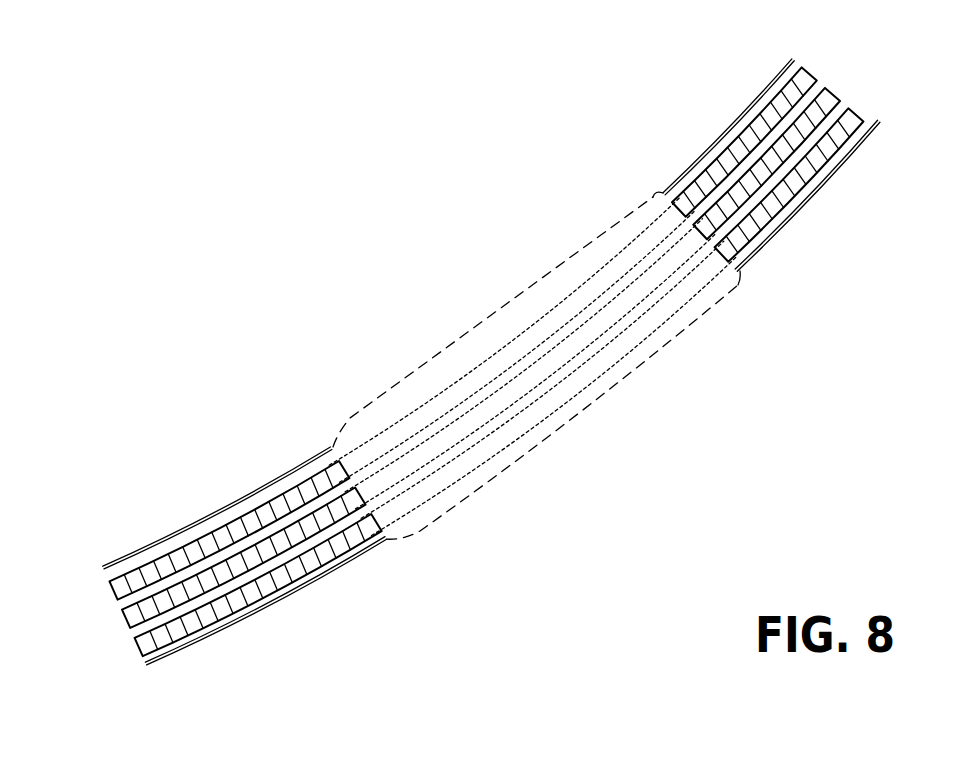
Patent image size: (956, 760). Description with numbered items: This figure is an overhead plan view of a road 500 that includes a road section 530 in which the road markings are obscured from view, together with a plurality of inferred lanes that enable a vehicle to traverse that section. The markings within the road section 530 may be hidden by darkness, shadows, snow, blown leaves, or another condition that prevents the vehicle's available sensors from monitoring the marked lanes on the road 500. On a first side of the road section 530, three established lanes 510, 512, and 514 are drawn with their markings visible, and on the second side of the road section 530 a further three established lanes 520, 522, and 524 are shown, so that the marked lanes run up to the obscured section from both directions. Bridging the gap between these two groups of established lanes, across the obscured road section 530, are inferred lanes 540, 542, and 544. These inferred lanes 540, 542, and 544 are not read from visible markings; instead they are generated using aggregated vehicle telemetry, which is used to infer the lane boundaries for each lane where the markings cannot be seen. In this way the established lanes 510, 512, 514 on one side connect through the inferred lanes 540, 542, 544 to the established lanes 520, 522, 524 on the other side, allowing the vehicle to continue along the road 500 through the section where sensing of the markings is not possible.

The road 500 is at (300, 584).
The established lane 510 is at (113, 590).
The established lane 512 is at (127, 616).
The established lane 514 is at (138, 643).
The established lane 520 is at (802, 68).
The established lane 522 is at (836, 96).
The established lane 524 is at (857, 116).
The road section 530 is at (610, 393).
The inferred lane 540 is at (390, 438).
The inferred lane 542 is at (435, 443).
The inferred lane 544 is at (487, 445).